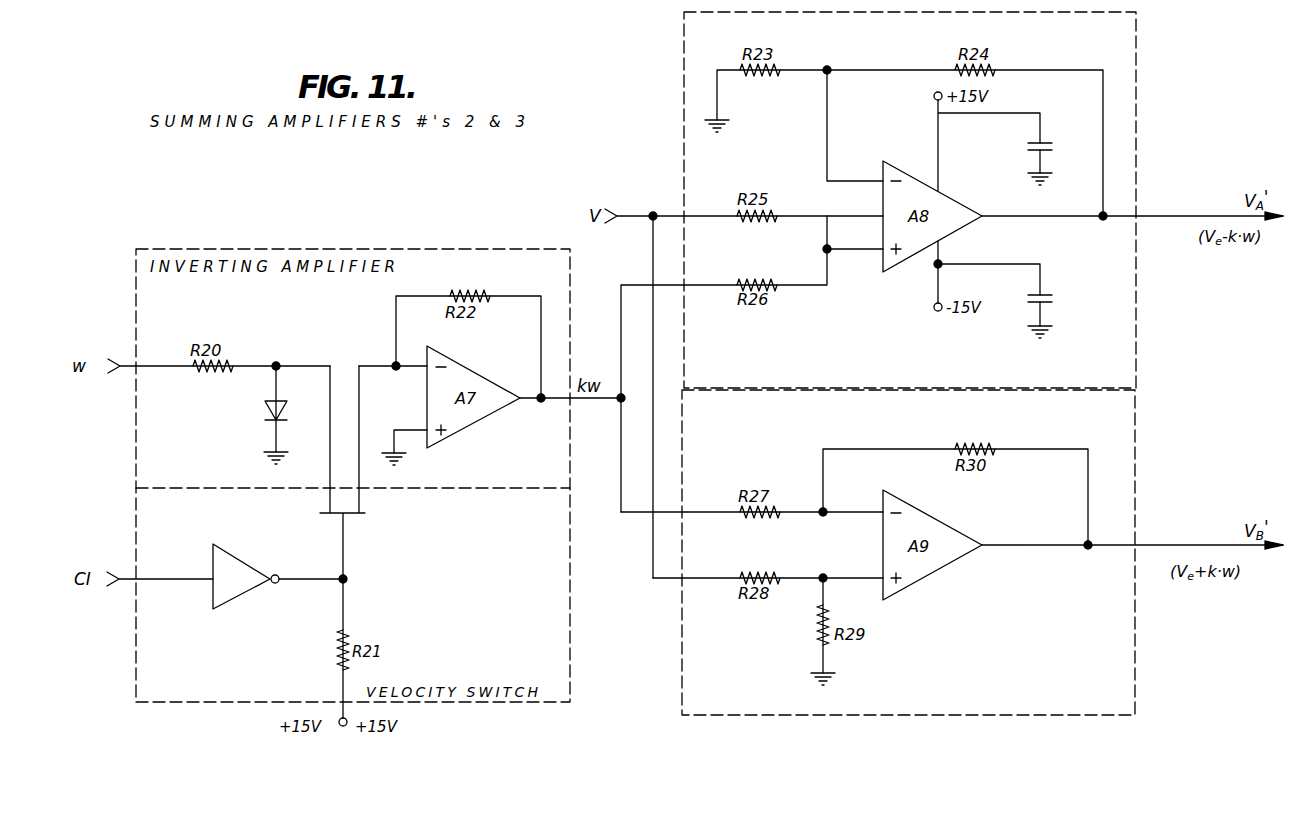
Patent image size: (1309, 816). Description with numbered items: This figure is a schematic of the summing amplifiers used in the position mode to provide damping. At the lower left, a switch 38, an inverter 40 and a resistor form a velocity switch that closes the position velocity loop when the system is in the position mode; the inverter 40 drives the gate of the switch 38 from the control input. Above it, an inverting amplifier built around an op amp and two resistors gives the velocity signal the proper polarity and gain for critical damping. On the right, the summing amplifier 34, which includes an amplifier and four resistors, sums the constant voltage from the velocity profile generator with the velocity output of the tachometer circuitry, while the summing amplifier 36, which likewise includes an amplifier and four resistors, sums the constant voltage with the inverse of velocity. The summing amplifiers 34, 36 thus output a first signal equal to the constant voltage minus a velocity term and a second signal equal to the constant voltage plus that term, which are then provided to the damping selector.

The second summing amplifier 34 is at (684, 50).
The third summing amplifier 36 is at (682, 700).
The switch 38 is at (352, 516).
The inverter 40 is at (234, 600).